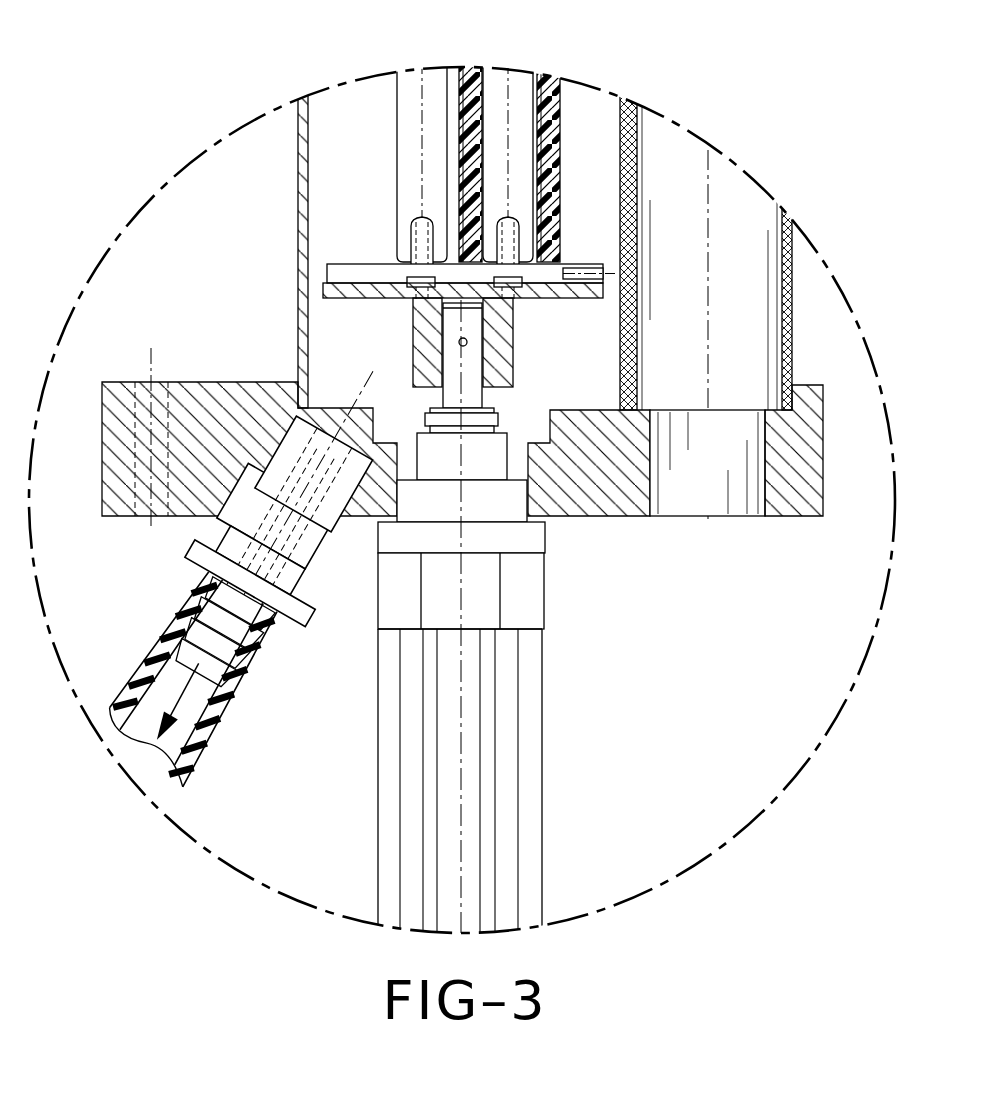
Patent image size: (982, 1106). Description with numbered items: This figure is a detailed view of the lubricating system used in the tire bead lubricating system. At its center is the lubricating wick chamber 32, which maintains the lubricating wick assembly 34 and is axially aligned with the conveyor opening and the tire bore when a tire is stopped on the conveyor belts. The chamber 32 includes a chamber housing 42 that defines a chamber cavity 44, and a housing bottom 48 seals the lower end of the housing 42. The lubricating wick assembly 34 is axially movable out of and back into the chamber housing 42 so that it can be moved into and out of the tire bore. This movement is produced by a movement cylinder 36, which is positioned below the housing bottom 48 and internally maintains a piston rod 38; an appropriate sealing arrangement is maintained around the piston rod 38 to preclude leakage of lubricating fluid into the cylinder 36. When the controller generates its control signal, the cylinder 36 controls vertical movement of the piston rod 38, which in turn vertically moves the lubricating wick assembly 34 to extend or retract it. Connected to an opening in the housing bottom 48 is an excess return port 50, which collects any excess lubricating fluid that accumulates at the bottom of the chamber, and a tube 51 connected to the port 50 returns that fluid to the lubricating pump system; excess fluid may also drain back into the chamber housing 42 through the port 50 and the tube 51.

The lubricating wick chamber 32 is at (284, 216).
The lubricating wick assembly 34 is at (563, 136).
The movement cylinder 36 is at (542, 780).
The piston rod 38 is at (470, 372).
The chamber housing 42 is at (790, 278).
The chamber cavity 44 is at (350, 148).
The housing bottom 48 is at (332, 408).
The excess return port 50 is at (306, 575).
The tube 51 is at (208, 722).